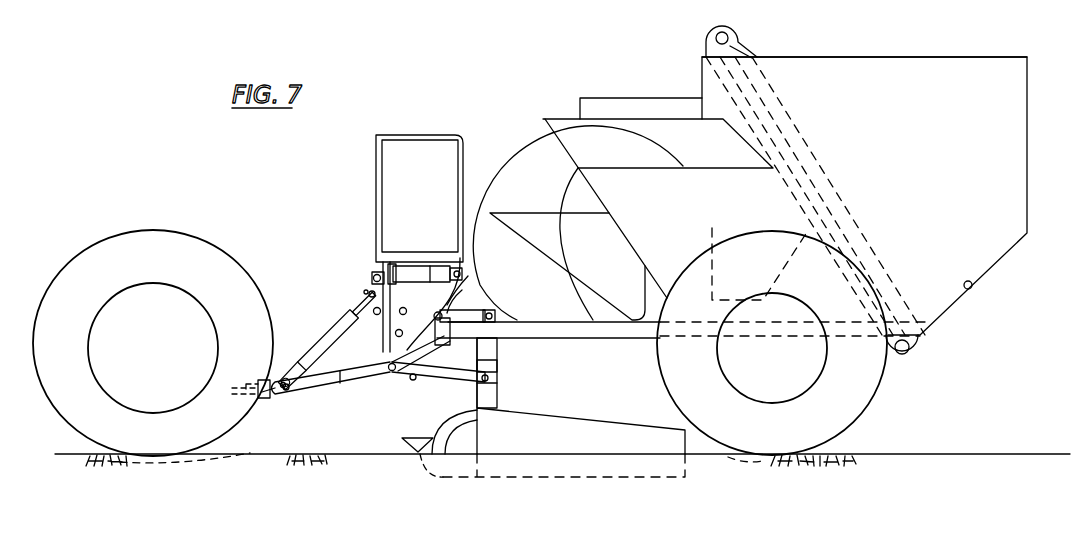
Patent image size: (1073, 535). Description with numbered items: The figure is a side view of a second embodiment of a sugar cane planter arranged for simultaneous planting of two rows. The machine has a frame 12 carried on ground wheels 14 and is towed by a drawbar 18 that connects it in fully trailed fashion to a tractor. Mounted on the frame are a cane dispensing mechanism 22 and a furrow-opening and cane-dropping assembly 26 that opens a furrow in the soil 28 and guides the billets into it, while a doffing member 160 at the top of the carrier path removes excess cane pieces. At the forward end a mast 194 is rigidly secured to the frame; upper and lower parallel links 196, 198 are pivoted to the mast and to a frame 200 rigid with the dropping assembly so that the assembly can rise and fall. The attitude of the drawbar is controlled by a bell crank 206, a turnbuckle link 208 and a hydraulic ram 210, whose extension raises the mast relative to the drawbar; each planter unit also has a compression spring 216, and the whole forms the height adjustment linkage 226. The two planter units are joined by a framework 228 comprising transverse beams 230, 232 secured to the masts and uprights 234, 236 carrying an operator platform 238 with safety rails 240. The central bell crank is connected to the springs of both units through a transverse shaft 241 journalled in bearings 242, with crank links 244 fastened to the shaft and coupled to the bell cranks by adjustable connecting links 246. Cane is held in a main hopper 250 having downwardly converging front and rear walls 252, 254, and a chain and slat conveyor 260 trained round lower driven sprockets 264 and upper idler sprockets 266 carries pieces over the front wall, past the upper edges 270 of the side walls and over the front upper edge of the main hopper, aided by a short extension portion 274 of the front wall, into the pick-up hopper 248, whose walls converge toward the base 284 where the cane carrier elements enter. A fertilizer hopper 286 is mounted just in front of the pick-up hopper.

The frame 12 is at (552, 338).
The ground wheels 14 is at (868, 420).
The drawbar 18 is at (282, 395).
The cane dispensing mechanism 22 is at (504, 142).
The furrow-opening and cane-dropping assembly 26 is at (440, 438).
The soil 28 is at (250, 452).
The doffing member 160 is at (612, 97).
The mast 194 is at (425, 350).
The upper parallel link 196 is at (492, 312).
The lower parallel link 198 is at (433, 382).
The frame 200 is at (497, 368).
The bell crank 206 is at (440, 428).
The turnbuckle link 208 is at (345, 306).
The hydraulic ram 210 is at (400, 264).
The compression spring 216 is at (428, 266).
The height adjustment linkage 226 is at (366, 286).
The framework 228 is at (355, 398).
The transverse beam 230 is at (380, 376).
The transverse beam 232 is at (468, 276).
The upright 234 is at (336, 378).
The upright 236 is at (458, 296).
The platform 238 is at (400, 256).
The safety rails 240 is at (465, 133).
The transverse shaft 241 is at (345, 318).
The bearings 242 is at (358, 322).
The crank links 244 is at (462, 290).
The adjustable connecting links 246 is at (365, 280).
The pick-up hopper 248 is at (622, 242).
The main hopper 250 is at (789, 175).
The front wall 252 is at (797, 150).
The rear wall 254 is at (968, 290).
The conveyor 260 is at (725, 29).
The lower driven sprockets 264 is at (903, 356).
The upper idler sprockets 266 is at (735, 35).
The upper edges 270 is at (921, 56).
The extension portion 274 is at (748, 50).
The base 284 is at (752, 251).
The fertilizer hopper 286 is at (541, 212).